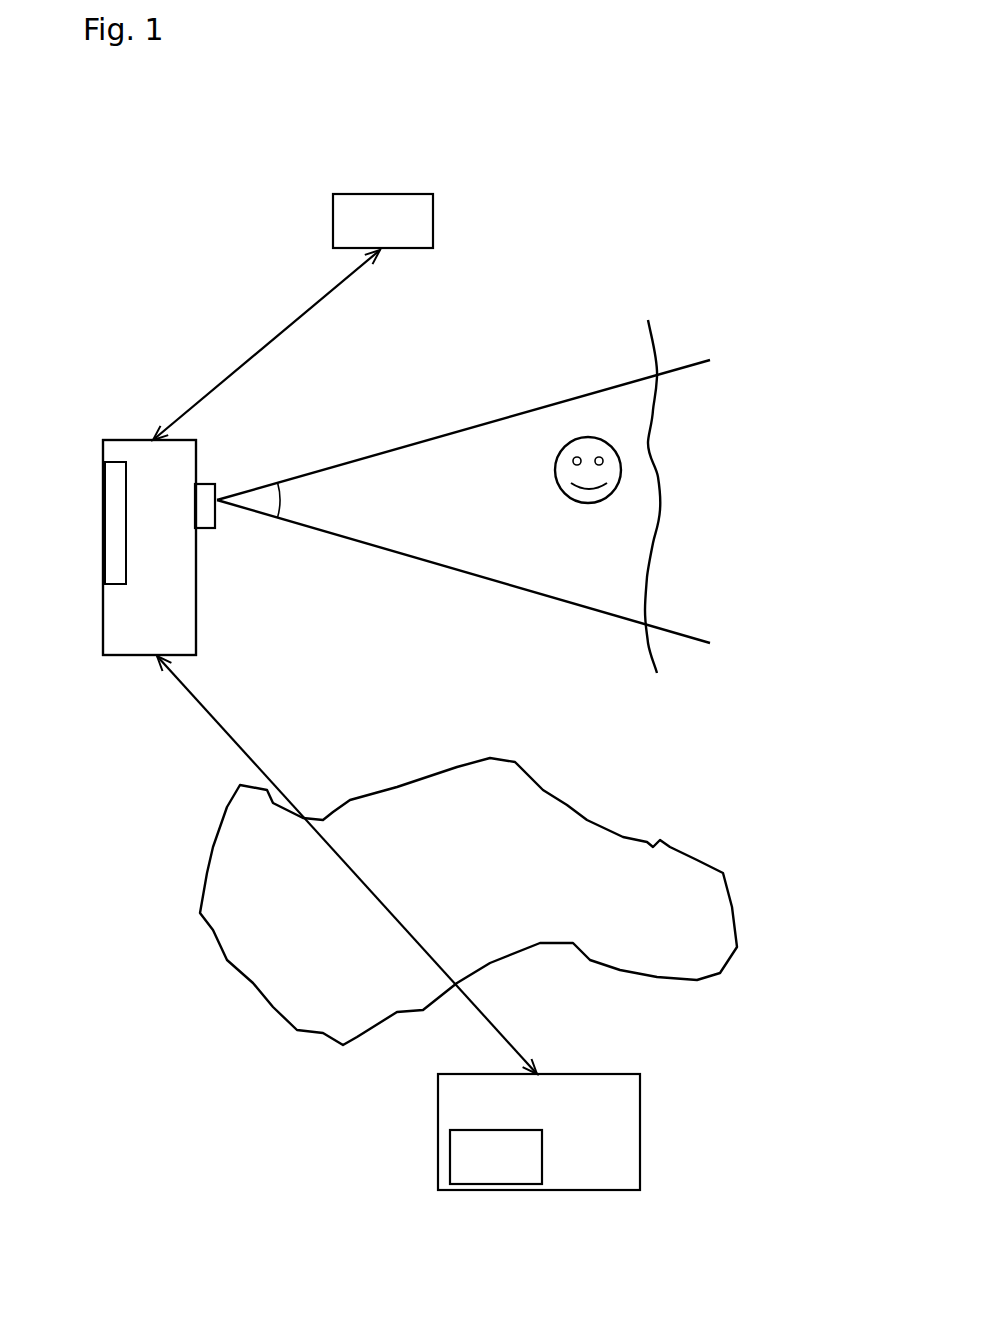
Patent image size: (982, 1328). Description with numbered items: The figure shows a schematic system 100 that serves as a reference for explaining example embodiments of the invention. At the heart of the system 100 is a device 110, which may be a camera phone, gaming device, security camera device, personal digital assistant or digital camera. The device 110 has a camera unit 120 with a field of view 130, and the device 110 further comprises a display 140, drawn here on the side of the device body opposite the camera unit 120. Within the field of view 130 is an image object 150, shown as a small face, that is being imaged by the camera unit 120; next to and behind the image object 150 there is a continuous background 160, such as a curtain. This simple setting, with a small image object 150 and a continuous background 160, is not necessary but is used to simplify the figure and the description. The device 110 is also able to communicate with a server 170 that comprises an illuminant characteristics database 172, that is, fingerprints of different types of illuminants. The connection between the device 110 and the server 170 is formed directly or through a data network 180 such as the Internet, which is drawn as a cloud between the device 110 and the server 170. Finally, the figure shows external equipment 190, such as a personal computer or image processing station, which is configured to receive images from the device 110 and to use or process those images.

The system 100 is at (123, 410).
The device 110 is at (205, 547).
The camera unit 120 is at (243, 530).
The field of view 130 is at (463, 501).
The display 140 is at (75, 516).
The image object 150 is at (565, 425).
The background 160 is at (703, 496).
The server 170 is at (608, 1132).
The illuminant characteristics database 172 is at (430, 1157).
The data network 180 is at (468, 901).
The external equipment 190 is at (450, 221).